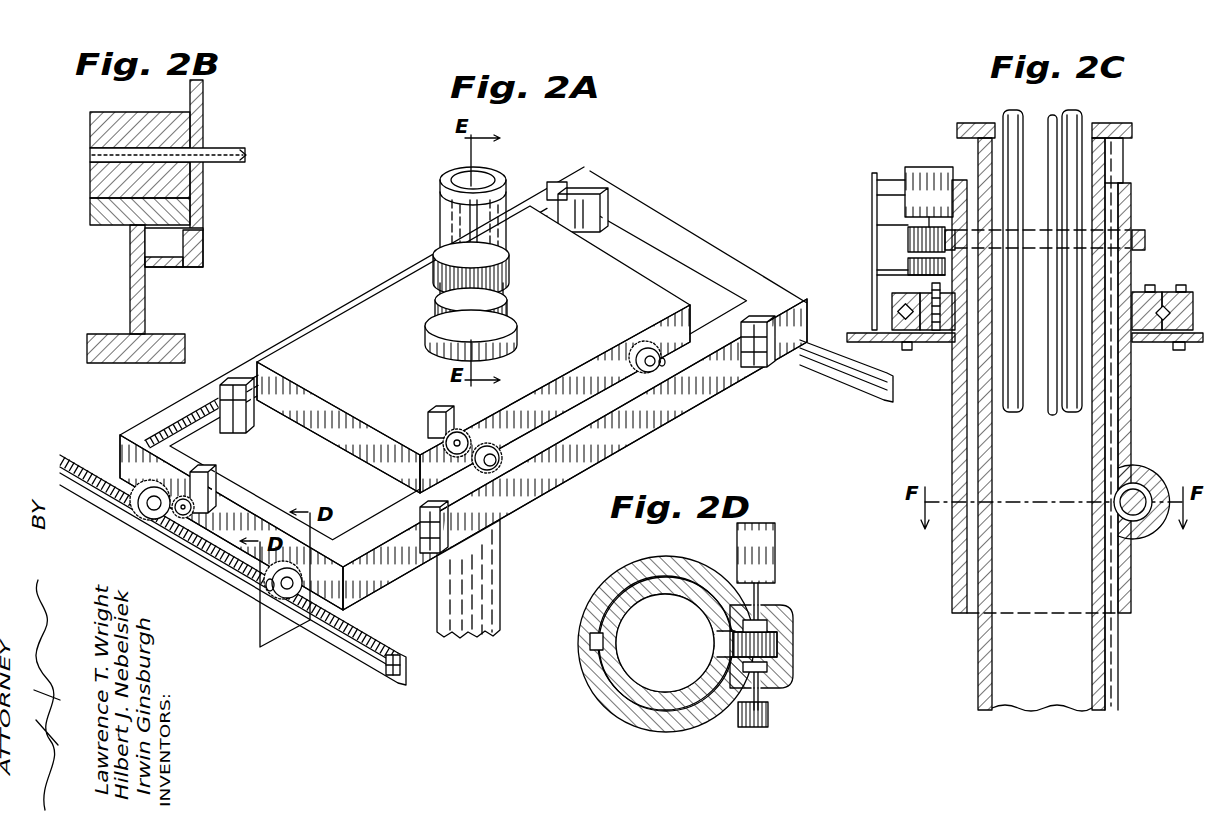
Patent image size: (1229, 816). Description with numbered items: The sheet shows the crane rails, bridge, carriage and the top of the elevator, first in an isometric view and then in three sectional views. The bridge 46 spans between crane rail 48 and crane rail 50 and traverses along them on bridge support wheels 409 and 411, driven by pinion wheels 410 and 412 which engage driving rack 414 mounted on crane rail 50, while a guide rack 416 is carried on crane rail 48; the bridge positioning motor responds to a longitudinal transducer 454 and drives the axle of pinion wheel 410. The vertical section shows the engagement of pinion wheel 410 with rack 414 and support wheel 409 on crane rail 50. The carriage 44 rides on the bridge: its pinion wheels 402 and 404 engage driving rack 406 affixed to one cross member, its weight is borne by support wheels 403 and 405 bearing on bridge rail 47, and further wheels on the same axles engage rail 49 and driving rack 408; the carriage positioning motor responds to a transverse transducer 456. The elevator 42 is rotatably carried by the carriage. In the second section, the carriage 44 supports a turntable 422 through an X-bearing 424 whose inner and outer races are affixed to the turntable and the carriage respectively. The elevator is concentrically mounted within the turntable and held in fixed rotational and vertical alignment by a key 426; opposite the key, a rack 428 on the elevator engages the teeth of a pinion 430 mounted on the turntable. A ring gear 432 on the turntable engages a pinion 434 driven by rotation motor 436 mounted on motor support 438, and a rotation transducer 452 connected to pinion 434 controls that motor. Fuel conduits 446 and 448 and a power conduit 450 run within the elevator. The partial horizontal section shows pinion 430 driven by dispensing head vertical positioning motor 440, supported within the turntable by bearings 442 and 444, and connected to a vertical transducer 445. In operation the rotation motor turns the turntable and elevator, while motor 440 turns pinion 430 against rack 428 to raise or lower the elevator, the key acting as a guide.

In FIG. 2A, the elevator 42 is at (440, 190).
In FIG. 2C, the elevator 42 is at (1135, 130).
In FIG. 2D, the elevator 42 is at (633, 612).
In FIG. 2A, the carriage 44 is at (356, 292).
In FIG. 2C, the carriage 44 is at (930, 345).
In FIG. 2A, the bridge 46 is at (666, 420).
In FIG. 2A, the bridge rail 47 is at (596, 408).
In FIG. 2A, the crane rail 48 is at (818, 355).
In FIG. 2A, the rail 49 is at (160, 417).
In FIG. 2B, the crane rail 50 is at (147, 290).
In FIG. 2A, the crane rail 50 is at (336, 652).
In FIG. 2A, the pinion wheel 402 is at (503, 450).
In FIG. 2A, the support wheel 403 is at (470, 450).
In FIG. 2A, the pinion wheel 404 is at (642, 343).
In FIG. 2A, the support wheel 405 is at (665, 364).
In FIG. 2A, the driving rack 406 is at (420, 507).
In FIG. 2A, the driving rack 408 is at (245, 405).
In FIG. 2B, the bridge support wheel 409 is at (96, 183).
In FIG. 2A, the bridge support wheel 409 is at (268, 590).
In FIG. 2B, the pinion wheel 410 is at (205, 117).
In FIG. 2A, the pinion wheel 410 is at (266, 582).
In FIG. 2A, the bridge support wheel 411 is at (170, 516).
In FIG. 2A, the pinion wheel 412 is at (138, 503).
In FIG. 2B, the driving rack 414 is at (212, 252).
In FIG. 2A, the driving rack 414 is at (404, 666).
In FIG. 2A, the guide rack 416 is at (870, 380).
In FIG. 2C, the turntable 422 is at (1132, 400).
In FIG. 2D, the turntable 422 is at (598, 700).
In FIG. 2A, the X-bearing 424 is at (518, 328).
In FIG. 2C, the X-bearing 424 is at (1163, 308).
In FIG. 2A, the key 426 is at (462, 235).
In FIG. 2C, the key 426 is at (976, 152).
In FIG. 2D, the key 426 is at (592, 645).
In FIG. 2C, the rack 428 is at (1125, 165).
In FIG. 2D, the rack 428 is at (730, 690).
In FIG. 2C, the pinion 430 is at (1140, 485).
In FIG. 2D, the pinion 430 is at (778, 645).
In FIG. 2A, the ring gear 432 is at (512, 270).
In FIG. 2C, the ring gear 432 is at (1145, 240).
In FIG. 2C, the pinion 434 is at (906, 238).
In FIG. 2C, the rotation motor 436 is at (905, 180).
In FIG. 2C, the motor support 438 is at (872, 186).
In FIG. 2D, the dispensing head vertical positioning motor 440 is at (777, 555).
In FIG. 2D, the bearing 442 is at (770, 625).
In FIG. 2D, the bearing 444 is at (770, 668).
In FIG. 2D, the vertical transducer 445 is at (770, 715).
In FIG. 2C, the fuel conduit 446 is at (1005, 112).
In FIG. 2C, the fuel conduit 448 is at (1085, 115).
In FIG. 2C, the power conduit 450 is at (1052, 118).
In FIG. 2C, the rotation transducer 452 is at (906, 268).
In FIG. 2A, the longitudinal transducer 454 is at (216, 486).
In FIG. 2A, the transverse transducer 456 is at (428, 410).